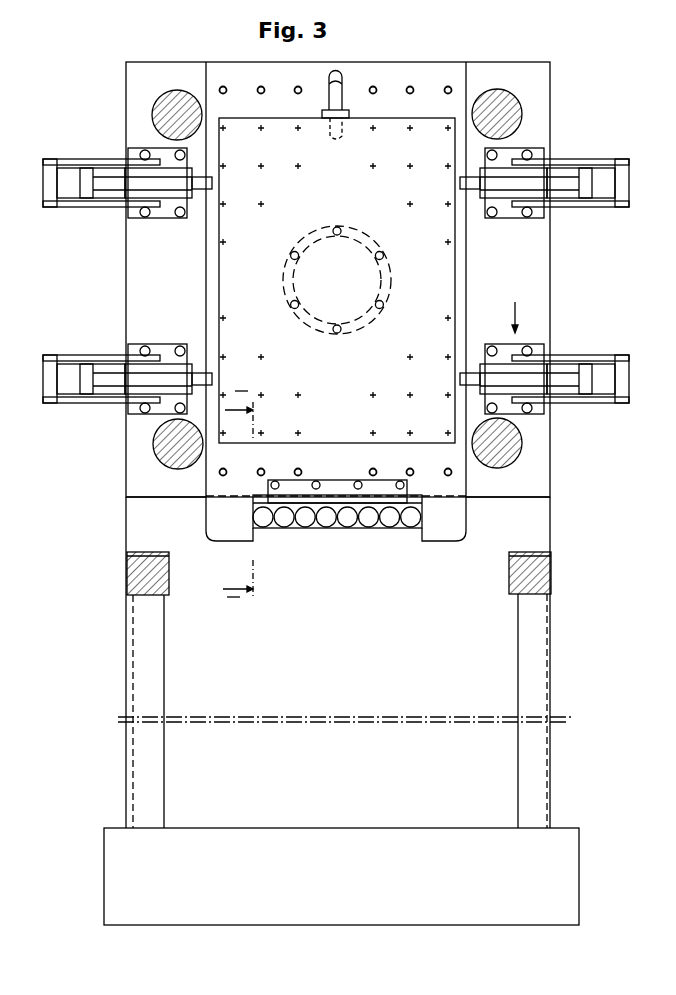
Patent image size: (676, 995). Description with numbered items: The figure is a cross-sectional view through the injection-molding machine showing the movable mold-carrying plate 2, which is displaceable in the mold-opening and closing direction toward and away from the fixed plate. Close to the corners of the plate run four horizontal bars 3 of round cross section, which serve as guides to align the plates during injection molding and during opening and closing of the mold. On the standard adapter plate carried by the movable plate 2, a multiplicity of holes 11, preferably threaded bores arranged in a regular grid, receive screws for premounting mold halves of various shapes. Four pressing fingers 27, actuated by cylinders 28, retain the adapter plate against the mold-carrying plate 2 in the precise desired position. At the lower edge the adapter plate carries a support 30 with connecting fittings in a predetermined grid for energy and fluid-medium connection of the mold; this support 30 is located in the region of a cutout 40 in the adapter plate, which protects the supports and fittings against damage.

The movable mold-carrying plate 2 is at (503, 73).
The horizontal bars 3 is at (163, 108).
The holes 11 is at (409, 164).
The pressing fingers 27 is at (200, 186).
The cylinders 28 is at (72, 187).
The support 30 is at (389, 523).
The cutout 40 is at (253, 500).